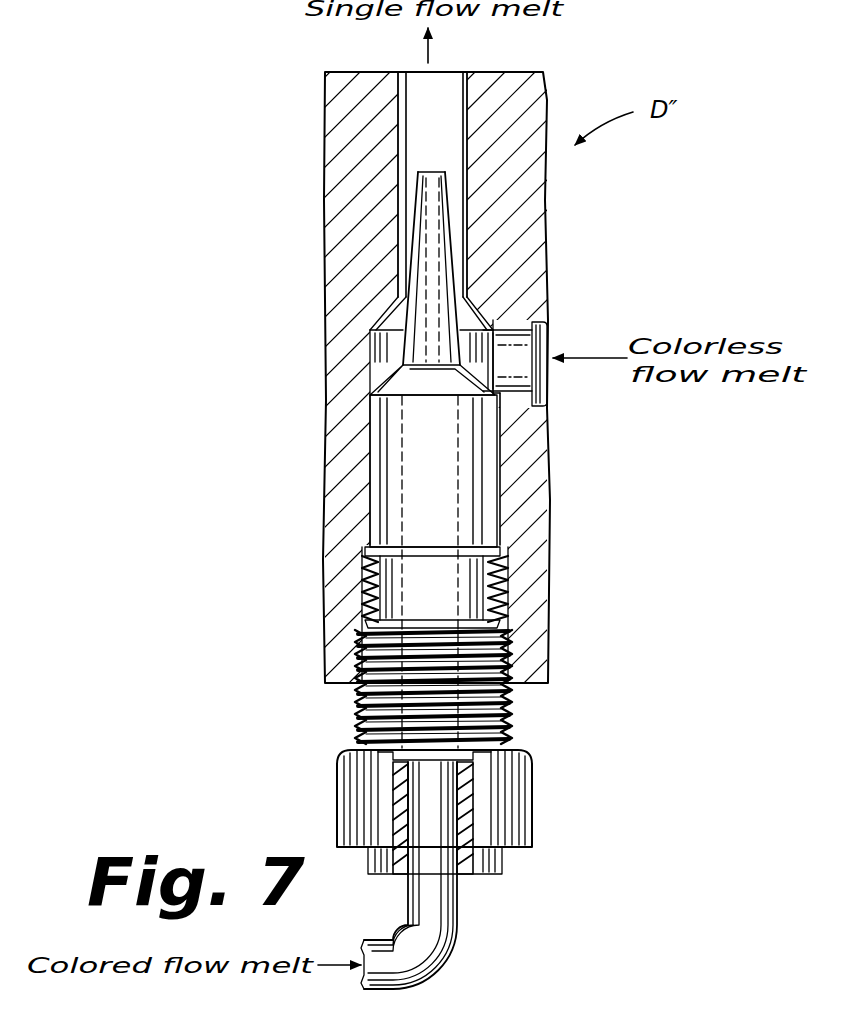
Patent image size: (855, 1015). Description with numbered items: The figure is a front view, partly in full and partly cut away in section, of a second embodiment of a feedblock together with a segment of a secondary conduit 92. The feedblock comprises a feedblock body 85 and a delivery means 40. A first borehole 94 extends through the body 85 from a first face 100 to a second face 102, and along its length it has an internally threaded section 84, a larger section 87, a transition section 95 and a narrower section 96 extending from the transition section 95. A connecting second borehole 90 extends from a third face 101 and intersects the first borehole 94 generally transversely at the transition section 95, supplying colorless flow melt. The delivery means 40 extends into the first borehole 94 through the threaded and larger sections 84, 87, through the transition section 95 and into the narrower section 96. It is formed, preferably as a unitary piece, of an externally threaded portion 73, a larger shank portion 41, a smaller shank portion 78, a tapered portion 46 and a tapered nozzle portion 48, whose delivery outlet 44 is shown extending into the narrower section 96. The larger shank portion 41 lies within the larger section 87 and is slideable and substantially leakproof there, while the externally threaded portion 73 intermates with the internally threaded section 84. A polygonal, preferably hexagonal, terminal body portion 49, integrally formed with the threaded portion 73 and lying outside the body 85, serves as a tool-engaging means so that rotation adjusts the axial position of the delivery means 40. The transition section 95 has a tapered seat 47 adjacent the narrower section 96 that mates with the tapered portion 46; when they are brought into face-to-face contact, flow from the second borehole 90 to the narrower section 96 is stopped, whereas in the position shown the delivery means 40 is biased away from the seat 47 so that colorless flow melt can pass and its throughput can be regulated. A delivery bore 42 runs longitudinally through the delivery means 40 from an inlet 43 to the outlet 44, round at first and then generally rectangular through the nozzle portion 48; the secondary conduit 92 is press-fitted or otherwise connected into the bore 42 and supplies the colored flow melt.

The delivery means 40 is at (352, 703).
The larger shank portion 41 is at (395, 493).
The delivery bore 42 is at (455, 270).
The inlet 43 is at (463, 876).
The delivery outlet 44 is at (432, 170).
The tapered portion 46 is at (392, 378).
The tapered seat 47 is at (395, 320).
The nozzle portion 48 is at (412, 240).
The terminal body portion 49 is at (520, 802).
The externally threaded portion 73 is at (513, 712).
The smaller shank portion 78 is at (482, 597).
The internally threaded section 84 is at (380, 597).
The feedblock body 85 is at (527, 463).
The larger section 87 is at (500, 510).
The second borehole 90 is at (542, 349).
The secondary conduit 92 is at (424, 955).
The first borehole 94 is at (466, 192).
The transition section 95 is at (488, 327).
The narrower section 96 is at (435, 97).
The first face 100 is at (522, 687).
The third face 101 is at (548, 425).
The second face 102 is at (518, 72).